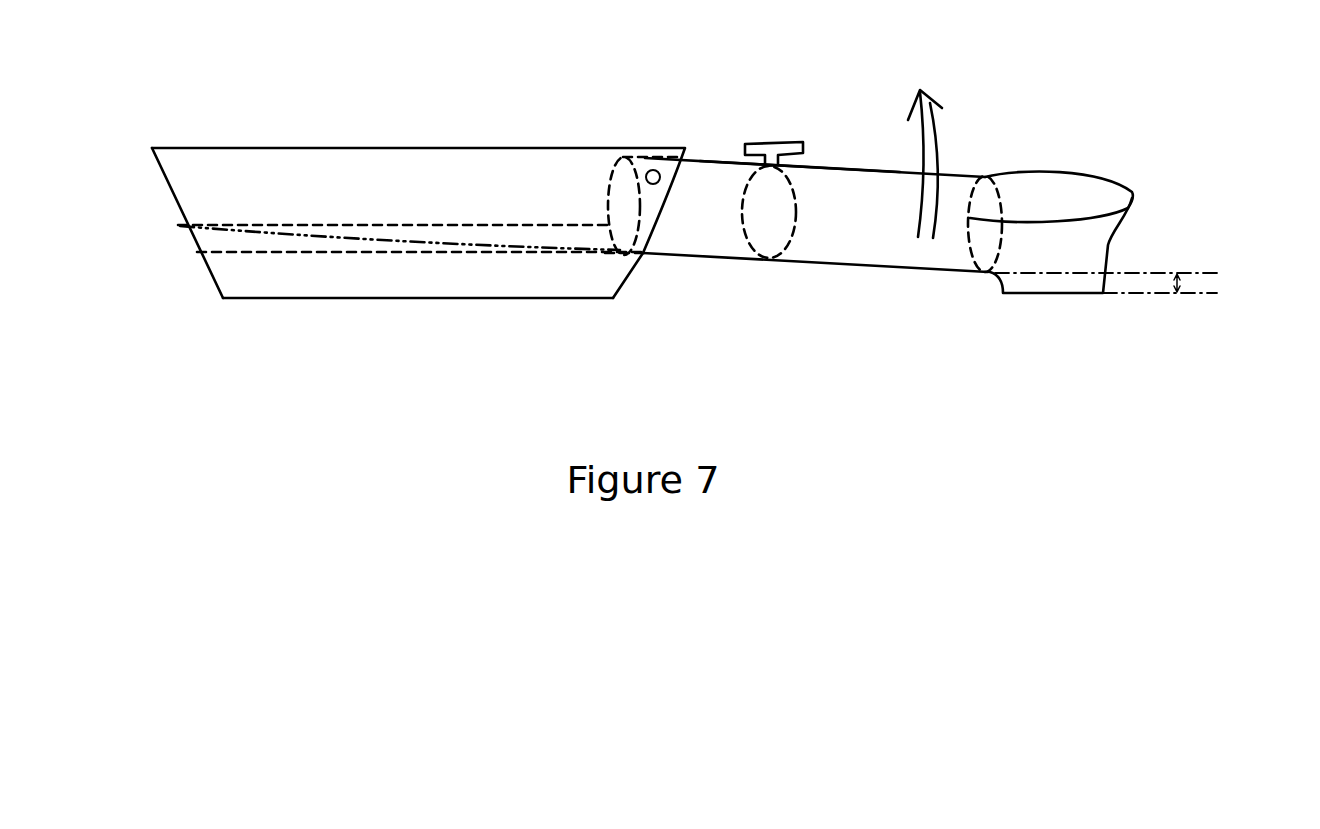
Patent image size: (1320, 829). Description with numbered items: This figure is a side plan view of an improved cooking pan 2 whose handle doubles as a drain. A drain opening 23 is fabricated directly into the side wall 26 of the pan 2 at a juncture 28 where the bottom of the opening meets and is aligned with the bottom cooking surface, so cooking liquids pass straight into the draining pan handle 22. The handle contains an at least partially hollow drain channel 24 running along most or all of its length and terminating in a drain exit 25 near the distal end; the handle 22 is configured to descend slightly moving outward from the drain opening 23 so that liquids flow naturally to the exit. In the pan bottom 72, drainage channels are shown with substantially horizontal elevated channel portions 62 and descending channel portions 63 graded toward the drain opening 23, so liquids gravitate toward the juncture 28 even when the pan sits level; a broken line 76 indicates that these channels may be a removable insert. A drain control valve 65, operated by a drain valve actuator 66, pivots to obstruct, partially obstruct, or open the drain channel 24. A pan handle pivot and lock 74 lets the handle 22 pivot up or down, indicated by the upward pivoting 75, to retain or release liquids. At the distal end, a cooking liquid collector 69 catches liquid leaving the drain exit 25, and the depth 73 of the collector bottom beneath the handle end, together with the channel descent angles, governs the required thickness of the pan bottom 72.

The cooking pan 2 is at (263, 122).
The draining pan handle 22 is at (825, 197).
The drain opening 23 is at (623, 203).
The drain channel 24 is at (858, 233).
The drain exit 25 is at (990, 202).
The side wall 26 is at (302, 201).
The juncture 28 is at (623, 253).
The elevated channel portions 62 is at (470, 225).
The descending channel portions 63 is at (462, 248).
The drain control valve 65 is at (770, 220).
The drain valve actuator 66 is at (778, 146).
The cooking liquid collector 69 is at (1041, 260).
The pan bottom 72 is at (280, 272).
The depth 73 is at (1180, 283).
The pan handle pivot and lock 74 is at (656, 170).
The upward pivoting 75 is at (930, 138).
The broken line 76 is at (238, 253).